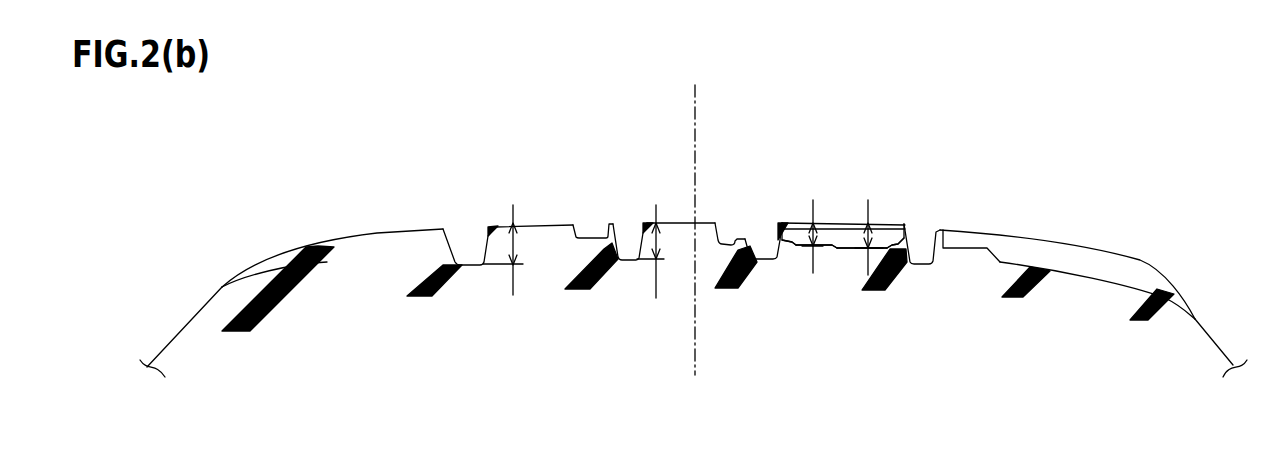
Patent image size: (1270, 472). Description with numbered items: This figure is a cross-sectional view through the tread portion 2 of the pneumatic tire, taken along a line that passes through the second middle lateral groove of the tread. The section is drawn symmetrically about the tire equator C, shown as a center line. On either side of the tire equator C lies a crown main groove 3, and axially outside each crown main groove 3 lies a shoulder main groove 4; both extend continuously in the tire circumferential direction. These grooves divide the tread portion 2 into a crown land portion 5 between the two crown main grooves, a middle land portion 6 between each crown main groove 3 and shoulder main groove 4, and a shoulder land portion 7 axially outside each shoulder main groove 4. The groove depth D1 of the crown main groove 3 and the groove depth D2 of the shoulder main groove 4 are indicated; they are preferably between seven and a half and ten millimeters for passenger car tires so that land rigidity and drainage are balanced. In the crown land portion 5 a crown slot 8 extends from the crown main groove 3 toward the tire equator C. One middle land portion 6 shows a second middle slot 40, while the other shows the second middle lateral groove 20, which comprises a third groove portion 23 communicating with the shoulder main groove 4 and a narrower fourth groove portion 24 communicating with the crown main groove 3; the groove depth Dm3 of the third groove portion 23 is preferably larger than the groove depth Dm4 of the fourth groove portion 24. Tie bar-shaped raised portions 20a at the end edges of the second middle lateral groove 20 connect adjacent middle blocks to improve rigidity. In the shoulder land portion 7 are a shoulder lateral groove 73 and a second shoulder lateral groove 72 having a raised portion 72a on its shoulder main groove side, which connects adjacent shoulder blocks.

The tread portion 2 is at (1168, 182).
The crown main groove 3 is at (625, 232).
The shoulder main groove 4 is at (465, 235).
The crown land portion 5 is at (675, 222).
The middle land portion 6 is at (560, 222).
The shoulder land portion 7 is at (370, 233).
The crown slot 8 is at (731, 233).
The second middle lateral groove 20 is at (838, 230).
The raised portion 20a is at (783, 222).
The third groove portion 23 is at (885, 235).
The fourth groove portion 24 is at (803, 232).
The second middle slot 40 is at (593, 235).
The second shoulder lateral groove 72 is at (1028, 248).
The raised portion 72a is at (973, 248).
The shoulder lateral groove 73 is at (285, 258).
The tire equator C is at (695, 216).
The groove depth of the crown main groove D1 is at (656, 240).
The groove depth of the shoulder main groove D2 is at (514, 242).
The groove depth of the third groove portion Dm3 is at (868, 238).
The groove depth of the fourth groove portion Dm4 is at (813, 240).